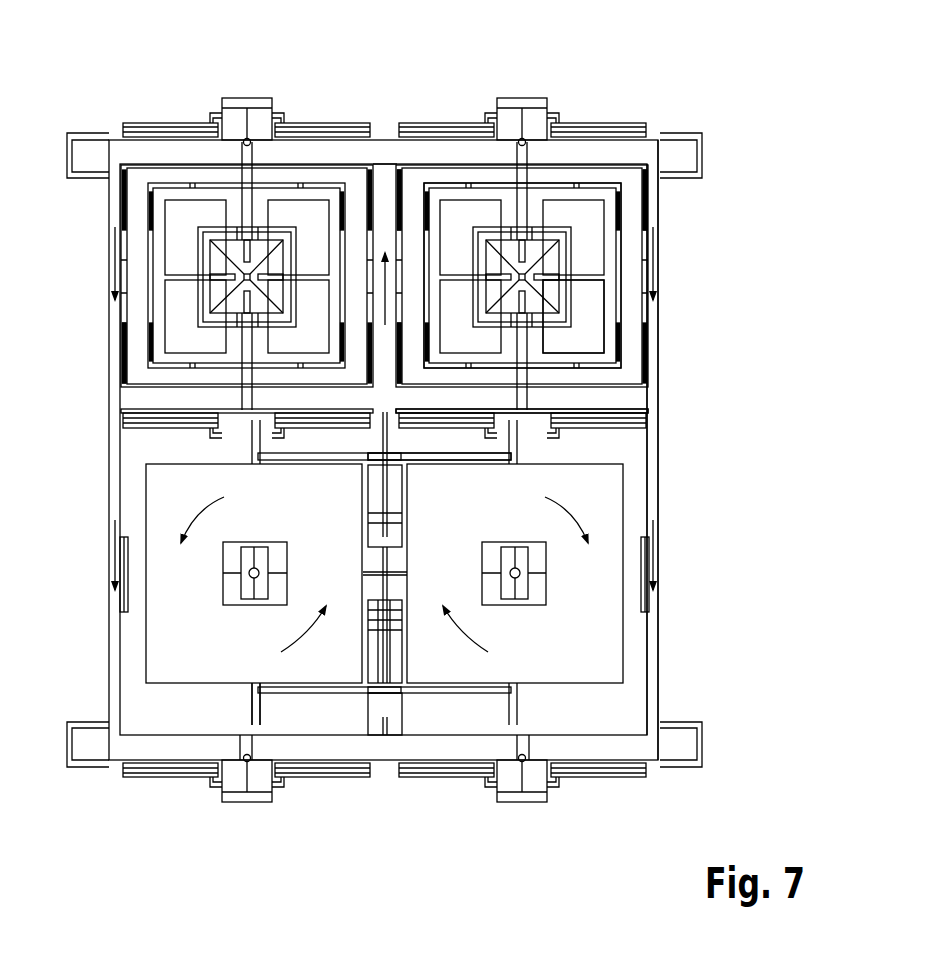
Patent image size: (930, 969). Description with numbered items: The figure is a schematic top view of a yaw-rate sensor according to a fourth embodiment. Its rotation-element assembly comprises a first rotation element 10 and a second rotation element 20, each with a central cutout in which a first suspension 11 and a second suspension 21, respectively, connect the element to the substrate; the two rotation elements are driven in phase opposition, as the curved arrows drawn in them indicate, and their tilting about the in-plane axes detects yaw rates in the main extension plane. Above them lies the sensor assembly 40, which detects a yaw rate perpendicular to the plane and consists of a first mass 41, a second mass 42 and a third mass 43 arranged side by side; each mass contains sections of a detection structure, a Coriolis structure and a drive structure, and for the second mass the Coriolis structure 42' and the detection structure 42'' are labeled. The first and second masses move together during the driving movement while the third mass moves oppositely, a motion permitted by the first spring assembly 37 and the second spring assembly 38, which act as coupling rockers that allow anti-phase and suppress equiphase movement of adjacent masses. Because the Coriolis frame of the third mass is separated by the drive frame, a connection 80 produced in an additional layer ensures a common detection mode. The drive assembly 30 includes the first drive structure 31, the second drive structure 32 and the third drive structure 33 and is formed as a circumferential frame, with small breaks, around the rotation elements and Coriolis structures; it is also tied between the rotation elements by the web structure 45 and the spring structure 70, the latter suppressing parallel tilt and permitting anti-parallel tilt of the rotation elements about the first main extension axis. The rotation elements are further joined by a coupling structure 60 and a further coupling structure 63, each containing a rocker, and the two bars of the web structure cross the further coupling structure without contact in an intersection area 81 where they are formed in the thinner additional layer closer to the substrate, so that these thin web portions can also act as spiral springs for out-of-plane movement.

The first rotation element 10 is at (197, 657).
The first suspension 11 is at (240, 588).
The second rotation element 20 is at (598, 494).
The second suspension 21 is at (533, 571).
The drive assembly 30 is at (690, 440).
The first drive structure 31 is at (110, 375).
The second drive structure 32 is at (656, 232).
The third drive structure 33 is at (392, 398).
The first spring assembly 37 is at (232, 97).
The second spring assembly 38 is at (509, 97).
The sensor assembly 40 is at (670, 104).
The first mass 41 is at (110, 204).
The second mass 42 is at (564, 276).
The Coriolis structure 42' is at (581, 275).
The detection structure 42'' is at (644, 326).
The third mass 43 is at (384, 150).
The web structure 45 is at (374, 490).
The coupling structure 60 is at (358, 693).
The further coupling structure 63 is at (500, 457).
The spring structure 70 is at (393, 556).
The connection 80 is at (405, 270).
The intersection area 81 is at (397, 460).